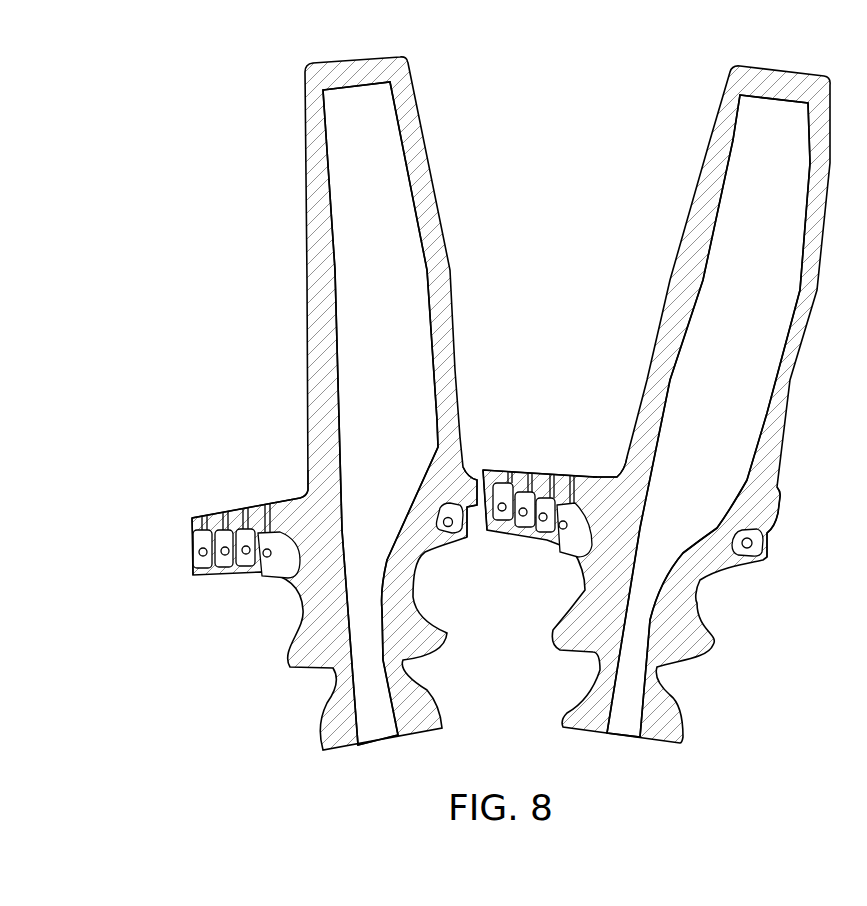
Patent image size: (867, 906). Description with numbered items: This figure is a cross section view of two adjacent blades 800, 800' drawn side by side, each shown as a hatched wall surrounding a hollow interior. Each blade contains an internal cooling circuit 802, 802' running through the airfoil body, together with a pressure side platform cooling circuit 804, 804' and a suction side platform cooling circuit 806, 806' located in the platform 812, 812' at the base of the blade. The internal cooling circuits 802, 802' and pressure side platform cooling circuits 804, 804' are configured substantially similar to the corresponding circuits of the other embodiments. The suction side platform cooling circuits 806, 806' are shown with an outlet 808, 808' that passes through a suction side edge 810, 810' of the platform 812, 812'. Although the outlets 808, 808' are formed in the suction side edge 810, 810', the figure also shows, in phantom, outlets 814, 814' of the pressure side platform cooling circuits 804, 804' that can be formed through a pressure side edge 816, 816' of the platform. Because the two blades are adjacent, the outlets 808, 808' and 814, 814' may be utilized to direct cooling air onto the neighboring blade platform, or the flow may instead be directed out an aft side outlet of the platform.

The blade 800 is at (334, 389).
The blade 800' is at (656, 388).
The internal cooling circuit 802 is at (380, 413).
The internal cooling circuit 802' is at (708, 416).
The pressure side platform cooling circuit 804 is at (196, 520).
The pressure side platform cooling circuit 804' is at (540, 473).
The suction side platform cooling circuit 806 is at (451, 548).
The suction side platform cooling circuit 806' is at (747, 572).
The outlet 808 is at (495, 539).
The outlet 808' is at (809, 538).
The suction side edge 810 is at (431, 468).
The suction side edge 810' is at (817, 505).
The platform 812 is at (284, 482).
The platform 812' is at (596, 456).
The outlet 814 is at (175, 576).
The outlet 814' is at (495, 481).
The pressure side edge 816 is at (153, 540).
The pressure side edge 816' is at (427, 491).